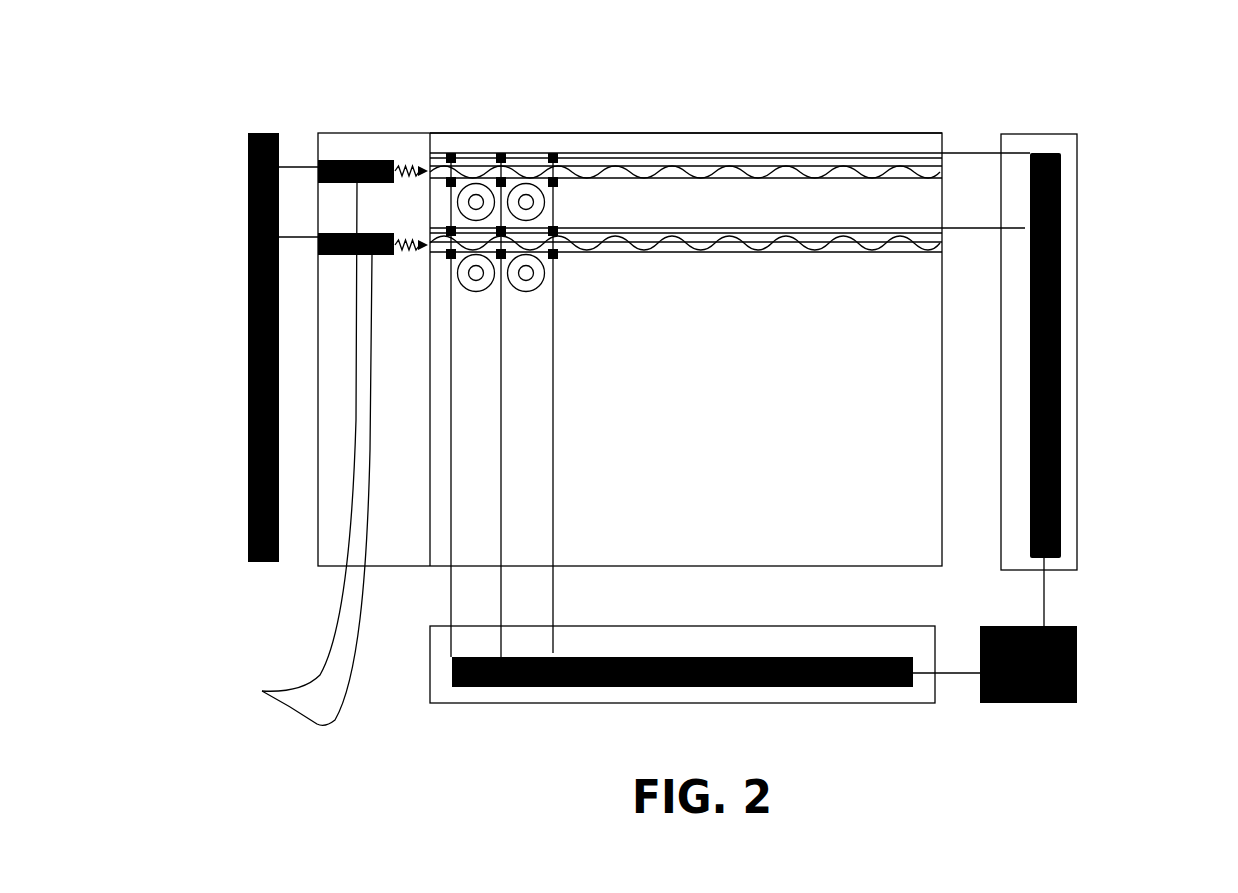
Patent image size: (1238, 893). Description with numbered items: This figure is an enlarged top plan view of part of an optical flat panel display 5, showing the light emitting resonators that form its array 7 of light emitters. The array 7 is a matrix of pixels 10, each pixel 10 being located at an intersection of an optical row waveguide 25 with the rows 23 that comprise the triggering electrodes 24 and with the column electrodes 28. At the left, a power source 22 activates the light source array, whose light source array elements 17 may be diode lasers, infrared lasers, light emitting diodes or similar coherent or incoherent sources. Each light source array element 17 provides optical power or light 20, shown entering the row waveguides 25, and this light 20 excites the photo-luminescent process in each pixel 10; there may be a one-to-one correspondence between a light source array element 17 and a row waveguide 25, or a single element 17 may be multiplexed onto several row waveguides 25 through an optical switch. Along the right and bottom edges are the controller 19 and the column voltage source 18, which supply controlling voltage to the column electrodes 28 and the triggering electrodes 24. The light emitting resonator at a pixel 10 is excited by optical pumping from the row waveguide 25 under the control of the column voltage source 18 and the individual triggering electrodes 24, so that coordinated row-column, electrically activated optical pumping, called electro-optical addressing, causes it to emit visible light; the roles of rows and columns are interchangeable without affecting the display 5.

The optical flat panel display 5 is at (807, 118).
The array of light emitters 7 is at (529, 115).
The pixel 10 is at (526, 273).
The light source array element 17 is at (295, 454).
The column voltage source 18 is at (1044, 703).
The controller 19 is at (1062, 463).
The light 20 is at (425, 176).
The power source 22 is at (248, 353).
The rows 23 is at (982, 152).
The triggering electrodes 24 is at (450, 226).
The optical row waveguide 25 is at (745, 170).
The column electrodes 28 is at (452, 597).